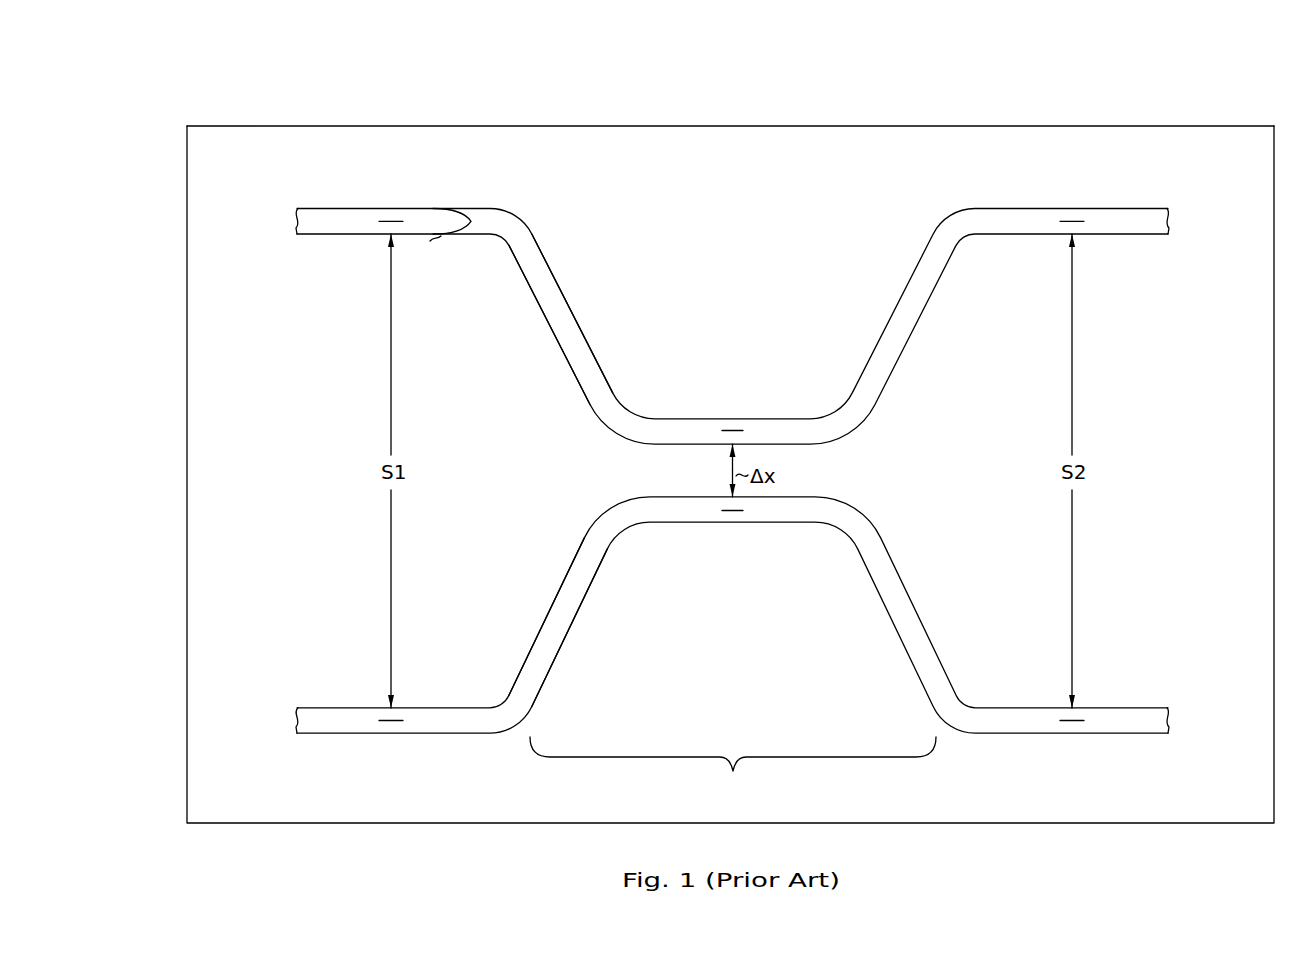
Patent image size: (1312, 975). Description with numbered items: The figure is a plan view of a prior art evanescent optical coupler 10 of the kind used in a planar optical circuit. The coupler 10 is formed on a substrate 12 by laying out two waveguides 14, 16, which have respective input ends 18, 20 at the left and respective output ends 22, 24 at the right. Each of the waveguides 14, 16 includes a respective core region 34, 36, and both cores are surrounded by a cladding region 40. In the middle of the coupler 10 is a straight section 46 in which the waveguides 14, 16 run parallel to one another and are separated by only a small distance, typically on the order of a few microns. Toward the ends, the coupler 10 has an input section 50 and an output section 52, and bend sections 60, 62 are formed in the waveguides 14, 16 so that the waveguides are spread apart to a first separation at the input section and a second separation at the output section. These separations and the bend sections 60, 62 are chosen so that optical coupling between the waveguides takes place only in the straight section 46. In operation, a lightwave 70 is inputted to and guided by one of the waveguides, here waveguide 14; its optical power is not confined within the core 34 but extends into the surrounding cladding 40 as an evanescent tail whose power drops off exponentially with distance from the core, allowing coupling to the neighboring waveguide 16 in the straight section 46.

The optical coupler 10 is at (749, 427).
The substrate 12 is at (749, 454).
The waveguide 14 is at (734, 298).
The waveguide 16 is at (734, 650).
The input end 18 is at (302, 238).
The input end 20 is at (304, 706).
The output end 22 is at (1162, 236).
The output end 24 is at (1162, 706).
The core region 34 is at (575, 317).
The core region 36 is at (597, 573).
The cladding region 40 is at (726, 135).
The straight section 46 is at (733, 770).
The input section 50 is at (262, 188).
The output section 52 is at (1198, 192).
The bend section 60 is at (565, 428).
The bend section 62 is at (898, 428).
The lightwave 70 is at (434, 209).